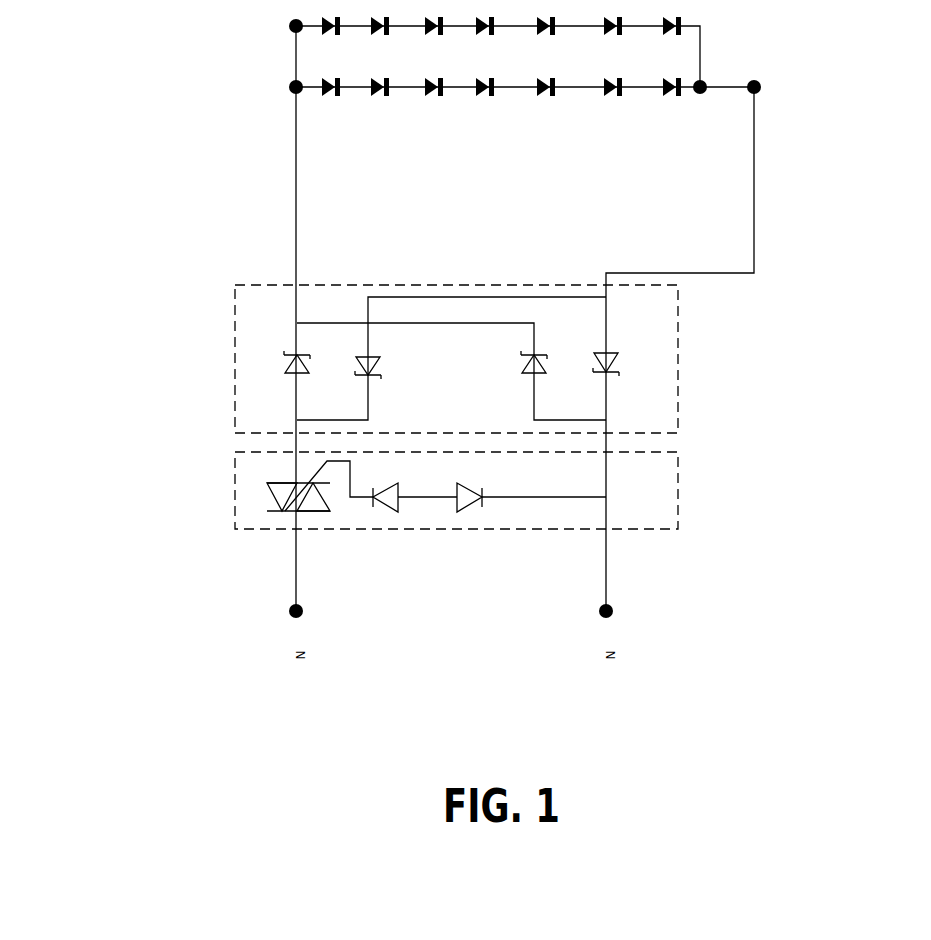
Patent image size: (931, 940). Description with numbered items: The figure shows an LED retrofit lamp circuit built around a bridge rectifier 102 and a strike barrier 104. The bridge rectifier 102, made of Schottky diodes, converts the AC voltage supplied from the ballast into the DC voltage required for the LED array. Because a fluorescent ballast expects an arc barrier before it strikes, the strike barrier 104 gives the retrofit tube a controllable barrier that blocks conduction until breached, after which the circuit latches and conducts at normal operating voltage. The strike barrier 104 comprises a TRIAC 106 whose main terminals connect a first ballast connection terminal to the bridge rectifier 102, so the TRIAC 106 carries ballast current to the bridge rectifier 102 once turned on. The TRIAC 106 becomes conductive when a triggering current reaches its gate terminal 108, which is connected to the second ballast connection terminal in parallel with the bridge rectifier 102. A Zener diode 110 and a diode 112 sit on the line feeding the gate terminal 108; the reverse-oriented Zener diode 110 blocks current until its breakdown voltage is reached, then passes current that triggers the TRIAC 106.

The bridge rectifier 102 is at (235, 296).
The strike barrier 104 is at (445, 548).
The TRIAC 106 is at (268, 497).
The gate terminal 108 is at (327, 461).
The Zener diode 110 is at (467, 512).
The diode 112 is at (385, 512).